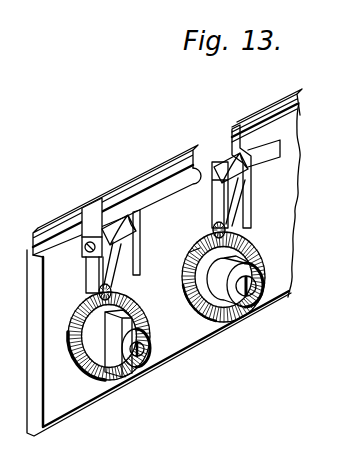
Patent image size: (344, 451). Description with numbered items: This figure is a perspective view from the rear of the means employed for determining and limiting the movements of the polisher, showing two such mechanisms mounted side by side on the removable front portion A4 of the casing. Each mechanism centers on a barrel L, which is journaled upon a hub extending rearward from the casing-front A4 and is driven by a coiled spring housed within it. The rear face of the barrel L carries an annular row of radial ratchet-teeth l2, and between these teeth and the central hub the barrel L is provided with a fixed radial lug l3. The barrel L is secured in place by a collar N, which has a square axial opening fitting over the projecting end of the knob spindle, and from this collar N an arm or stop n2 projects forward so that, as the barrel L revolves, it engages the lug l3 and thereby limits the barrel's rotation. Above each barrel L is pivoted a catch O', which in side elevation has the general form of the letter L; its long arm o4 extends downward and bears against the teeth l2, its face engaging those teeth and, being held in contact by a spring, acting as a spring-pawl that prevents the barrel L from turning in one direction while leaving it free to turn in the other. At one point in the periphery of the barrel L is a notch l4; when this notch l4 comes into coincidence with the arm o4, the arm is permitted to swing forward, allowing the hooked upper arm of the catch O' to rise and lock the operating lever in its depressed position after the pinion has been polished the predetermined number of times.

The removable front portion of the casing A4 is at (164, 262).
The catch O' is at (181, 209).
The long arm of the catch o4 is at (240, 212).
The radial ratchet-teeth l2 is at (70, 324).
The fixed radial lug l3 is at (140, 313).
The notch l4 is at (97, 294).
The barrel L is at (192, 254).
The arm or stop n2 is at (229, 281).
The collar N is at (150, 350).